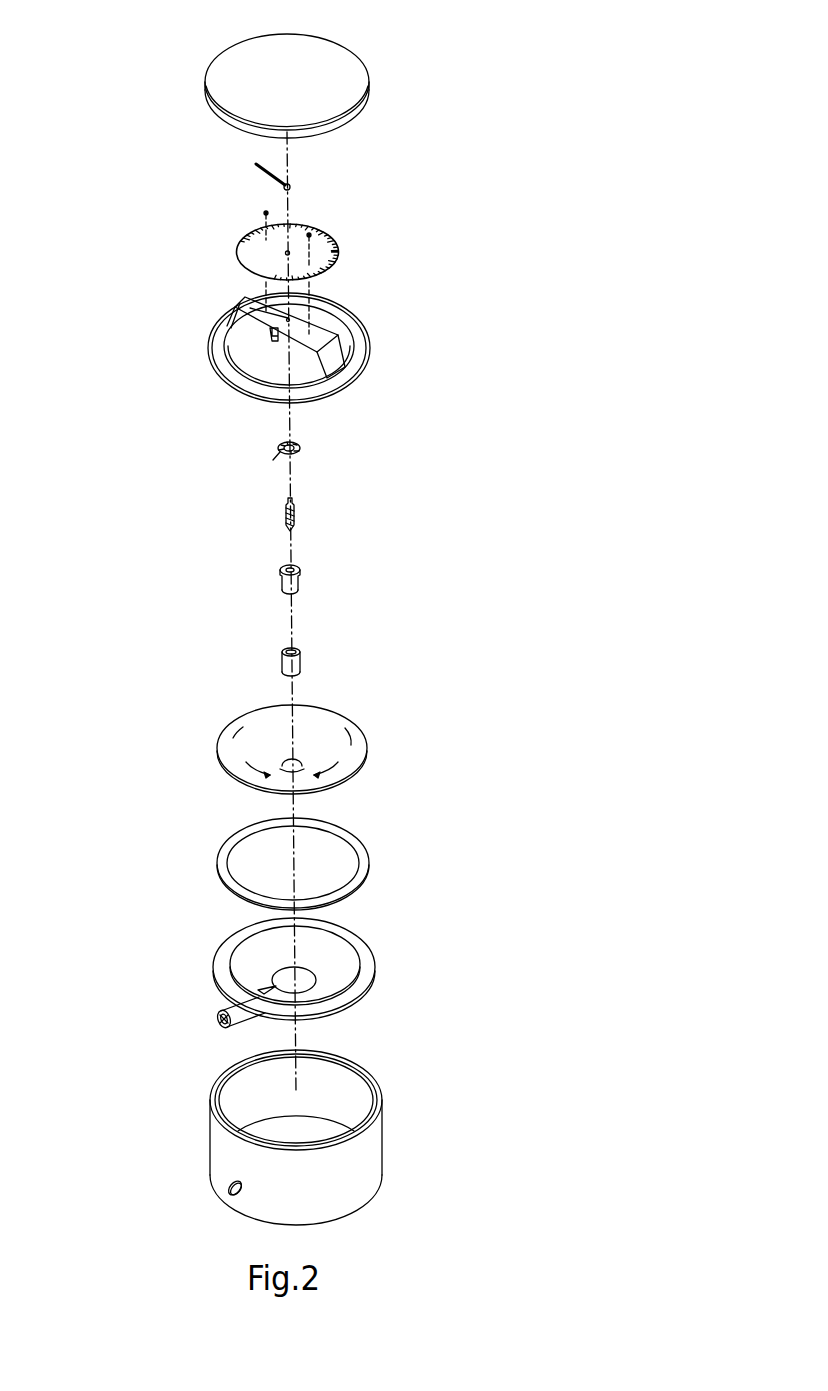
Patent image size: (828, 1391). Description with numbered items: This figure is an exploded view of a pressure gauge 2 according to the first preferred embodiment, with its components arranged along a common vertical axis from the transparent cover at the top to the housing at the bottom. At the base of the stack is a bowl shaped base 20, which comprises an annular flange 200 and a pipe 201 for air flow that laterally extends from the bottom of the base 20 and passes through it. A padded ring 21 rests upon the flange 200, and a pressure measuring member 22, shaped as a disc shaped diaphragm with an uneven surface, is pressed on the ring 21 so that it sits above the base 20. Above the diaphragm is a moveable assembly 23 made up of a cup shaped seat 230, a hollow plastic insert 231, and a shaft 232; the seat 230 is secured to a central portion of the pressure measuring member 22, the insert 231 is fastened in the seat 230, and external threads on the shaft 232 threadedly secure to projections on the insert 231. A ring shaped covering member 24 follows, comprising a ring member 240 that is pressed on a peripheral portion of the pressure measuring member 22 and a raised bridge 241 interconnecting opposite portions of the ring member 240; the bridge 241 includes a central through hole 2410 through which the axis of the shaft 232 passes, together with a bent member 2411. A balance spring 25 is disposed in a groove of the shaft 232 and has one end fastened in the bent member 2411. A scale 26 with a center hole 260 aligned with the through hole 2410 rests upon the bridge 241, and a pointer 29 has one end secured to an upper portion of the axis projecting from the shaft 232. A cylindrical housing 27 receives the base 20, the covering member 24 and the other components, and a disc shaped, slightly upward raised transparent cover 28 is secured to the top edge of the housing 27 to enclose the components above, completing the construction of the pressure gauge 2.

The pressure gauge 2 is at (118, 66).
The transparent cover 28 is at (348, 62).
The pointer 29 is at (262, 176).
The scale 26 is at (319, 260).
The center hole 260 is at (288, 251).
The covering member 24 is at (318, 348).
The ring member 240 is at (343, 384).
The bridge 241 is at (268, 323).
The central through hole 2410 is at (287, 319).
The bent member 2411 is at (271, 334).
The balance spring 25 is at (299, 451).
The moveable assembly 23 is at (279, 579).
The shaft 232 is at (285, 513).
The insert 231 is at (299, 584).
The seat 230 is at (284, 665).
The pressure measuring member 22 is at (356, 741).
The padded ring 21 is at (365, 866).
The base 20 is at (259, 999).
The annular flange 200 is at (229, 951).
The pipe 201 is at (236, 1005).
The housing 27 is at (373, 1156).